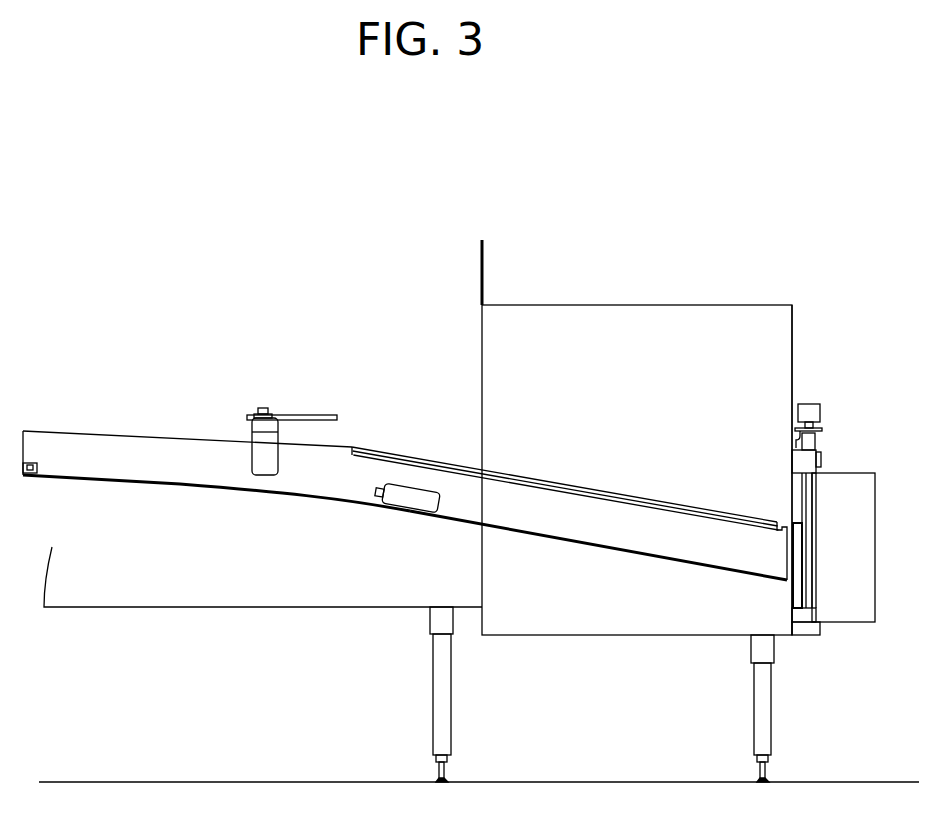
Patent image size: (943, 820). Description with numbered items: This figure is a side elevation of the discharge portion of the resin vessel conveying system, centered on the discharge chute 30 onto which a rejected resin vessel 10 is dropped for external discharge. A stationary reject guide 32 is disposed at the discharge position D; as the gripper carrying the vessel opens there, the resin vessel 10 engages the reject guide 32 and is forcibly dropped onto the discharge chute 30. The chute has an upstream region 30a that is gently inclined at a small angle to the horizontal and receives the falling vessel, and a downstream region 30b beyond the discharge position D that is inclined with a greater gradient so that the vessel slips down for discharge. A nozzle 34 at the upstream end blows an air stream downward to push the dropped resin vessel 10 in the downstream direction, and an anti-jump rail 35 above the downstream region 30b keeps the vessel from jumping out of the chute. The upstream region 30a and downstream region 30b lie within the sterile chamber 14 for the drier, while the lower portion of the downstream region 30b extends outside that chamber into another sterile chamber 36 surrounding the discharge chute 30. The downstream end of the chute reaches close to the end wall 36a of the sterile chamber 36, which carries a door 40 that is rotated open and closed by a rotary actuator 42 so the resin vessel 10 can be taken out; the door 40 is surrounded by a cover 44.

The resin vessel 10 is at (248, 430).
The sterile chamber for the drier 14 is at (484, 265).
The discharge chute 30 is at (405, 512).
The upstream region 30a is at (106, 480).
The downstream region 30b is at (528, 534).
The reject guide 32 is at (291, 414).
The nozzle 34 is at (31, 478).
The anti-jump rail 35 is at (518, 474).
The sterile chamber for the discharge chute 36 is at (657, 305).
The end wall 36a is at (793, 325).
The door 40 is at (802, 566).
The rotary actuator 42 is at (811, 404).
The cover 44 is at (851, 473).
The discharge position D is at (250, 490).